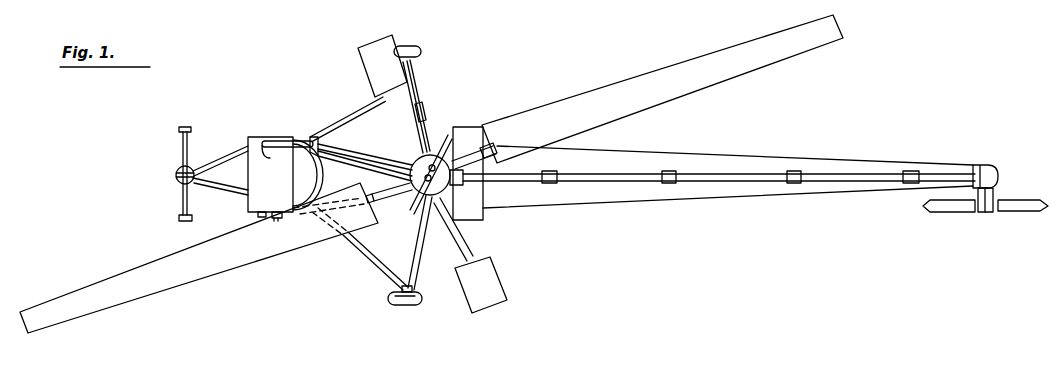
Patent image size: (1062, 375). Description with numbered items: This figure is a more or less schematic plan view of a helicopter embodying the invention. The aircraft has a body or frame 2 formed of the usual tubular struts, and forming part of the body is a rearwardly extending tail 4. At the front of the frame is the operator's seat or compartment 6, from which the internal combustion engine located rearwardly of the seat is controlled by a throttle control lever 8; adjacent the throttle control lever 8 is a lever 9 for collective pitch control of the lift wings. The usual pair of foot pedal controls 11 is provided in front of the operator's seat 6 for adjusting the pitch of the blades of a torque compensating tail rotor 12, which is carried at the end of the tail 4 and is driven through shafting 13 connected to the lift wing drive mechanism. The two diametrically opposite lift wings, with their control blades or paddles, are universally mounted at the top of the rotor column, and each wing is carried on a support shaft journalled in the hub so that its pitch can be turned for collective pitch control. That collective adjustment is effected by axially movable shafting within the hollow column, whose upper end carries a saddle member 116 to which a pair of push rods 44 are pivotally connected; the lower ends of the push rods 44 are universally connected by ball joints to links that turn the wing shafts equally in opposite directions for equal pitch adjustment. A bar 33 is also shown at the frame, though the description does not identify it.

The body or frame 2 is at (346, 113).
The tail 4 is at (752, 160).
The operator's seat or compartment 6 is at (278, 194).
The throttle control lever 8 is at (261, 218).
The lever 9 is at (276, 218).
The foot pedal controls 11 is at (180, 147).
The torque compensating tail rotor 12 is at (950, 206).
The shafting 13 is at (764, 182).
The bar 33 is at (260, 146).
The push rods 44 is at (440, 148).
The saddle member 116 is at (445, 186).